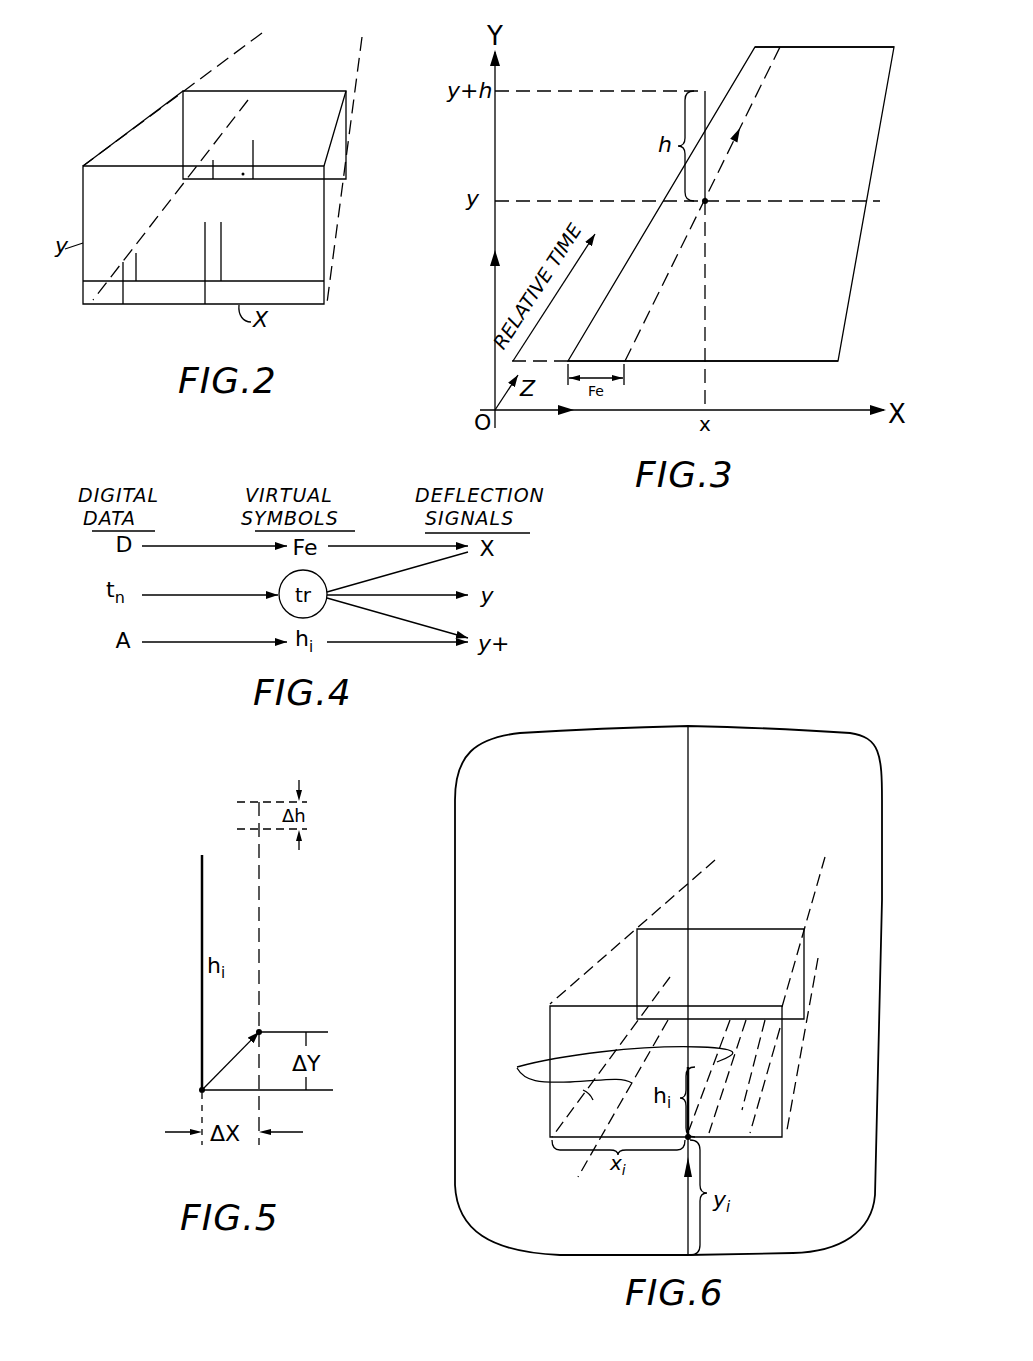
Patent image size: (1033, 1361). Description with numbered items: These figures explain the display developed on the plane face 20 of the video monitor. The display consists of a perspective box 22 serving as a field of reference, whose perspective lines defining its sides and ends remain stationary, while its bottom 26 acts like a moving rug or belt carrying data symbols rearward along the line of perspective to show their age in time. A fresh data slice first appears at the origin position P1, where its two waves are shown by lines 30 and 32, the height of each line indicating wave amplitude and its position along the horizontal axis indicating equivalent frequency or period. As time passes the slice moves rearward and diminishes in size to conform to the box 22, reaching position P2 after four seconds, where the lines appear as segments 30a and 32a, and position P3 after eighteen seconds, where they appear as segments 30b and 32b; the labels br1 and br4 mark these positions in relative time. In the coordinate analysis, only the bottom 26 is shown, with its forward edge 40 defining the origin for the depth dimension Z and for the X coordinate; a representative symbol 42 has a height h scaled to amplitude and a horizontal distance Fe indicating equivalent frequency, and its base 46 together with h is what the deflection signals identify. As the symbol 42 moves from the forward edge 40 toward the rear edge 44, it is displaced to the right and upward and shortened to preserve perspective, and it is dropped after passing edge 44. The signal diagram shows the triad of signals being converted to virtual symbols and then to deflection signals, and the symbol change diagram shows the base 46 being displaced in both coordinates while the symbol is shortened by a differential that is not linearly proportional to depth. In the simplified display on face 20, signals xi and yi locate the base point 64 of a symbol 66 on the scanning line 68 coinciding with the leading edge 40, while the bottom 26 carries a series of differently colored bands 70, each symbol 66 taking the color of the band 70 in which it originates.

In FIG. 6, the plane face 20 is at (780, 752).
In FIG. 6, the perspective box 22 is at (807, 947).
In FIG. 3, the bottom 26 is at (849, 307).
In FIG. 6, the bottom 26 is at (752, 1070).
In FIG. 2, the line 30 is at (123, 293).
In FIG. 2, the line 32 is at (203, 292).
In FIG. 2, the first stroke segment in plane P2 30a is at (136, 272).
In FIG. 2, the second stroke segment in plane P2 32a is at (221, 248).
In FIG. 2, the first stroke segment in plane P3 30b is at (213, 160).
In FIG. 2, the second stroke segment in plane P3 32b is at (255, 157).
In FIG. 3, the forward edge 40 is at (795, 365).
In FIG. 6, the forward edge 40 is at (613, 1116).
In FIG. 3, the symbol 42 is at (707, 174).
In FIG. 3, the rear edge 44 is at (841, 47).
In FIG. 3, the base 46 is at (706, 204).
In FIG. 5, the base 46 is at (200, 1091).
In FIG. 6, the base point 64 is at (690, 1138).
In FIG. 6, the symbol 66 is at (690, 1112).
In FIG. 6, the scanning line 68 is at (688, 962).
In FIG. 6, the bands 70 is at (615, 1071).
In FIG. 2, the origin position P1 is at (293, 305).
In FIG. 2, the position P2 is at (298, 281).
In FIG. 2, the position P3 is at (352, 128).
In FIG. 2, the brightness level 1 br1 is at (344, 307).
In FIG. 2, the brightness level 4 br4 is at (328, 281).